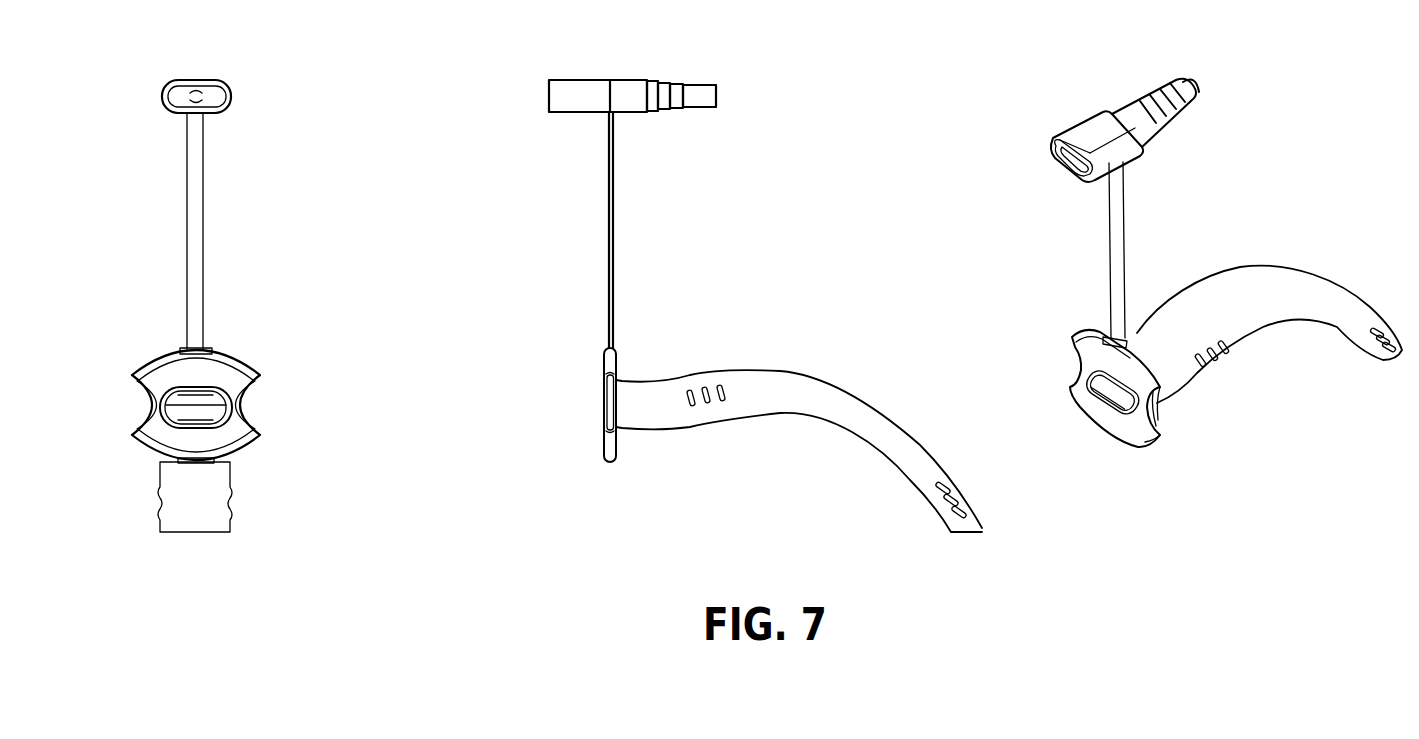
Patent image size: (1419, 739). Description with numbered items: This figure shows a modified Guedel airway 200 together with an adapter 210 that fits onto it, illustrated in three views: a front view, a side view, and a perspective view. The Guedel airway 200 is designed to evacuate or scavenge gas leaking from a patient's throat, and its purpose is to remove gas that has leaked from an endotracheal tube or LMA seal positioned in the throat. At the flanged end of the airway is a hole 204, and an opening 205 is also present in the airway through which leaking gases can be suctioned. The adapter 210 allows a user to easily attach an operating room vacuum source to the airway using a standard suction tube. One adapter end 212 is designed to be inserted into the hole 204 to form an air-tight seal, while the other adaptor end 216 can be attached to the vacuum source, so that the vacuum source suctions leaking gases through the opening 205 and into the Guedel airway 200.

The Guedel airway 200 is at (758, 317).
The hole 204 is at (170, 405).
The opening 205 is at (197, 535).
The adapter 210 is at (1127, 105).
The adapter end 212 is at (1062, 128).
The adaptor end 216 is at (1200, 88).